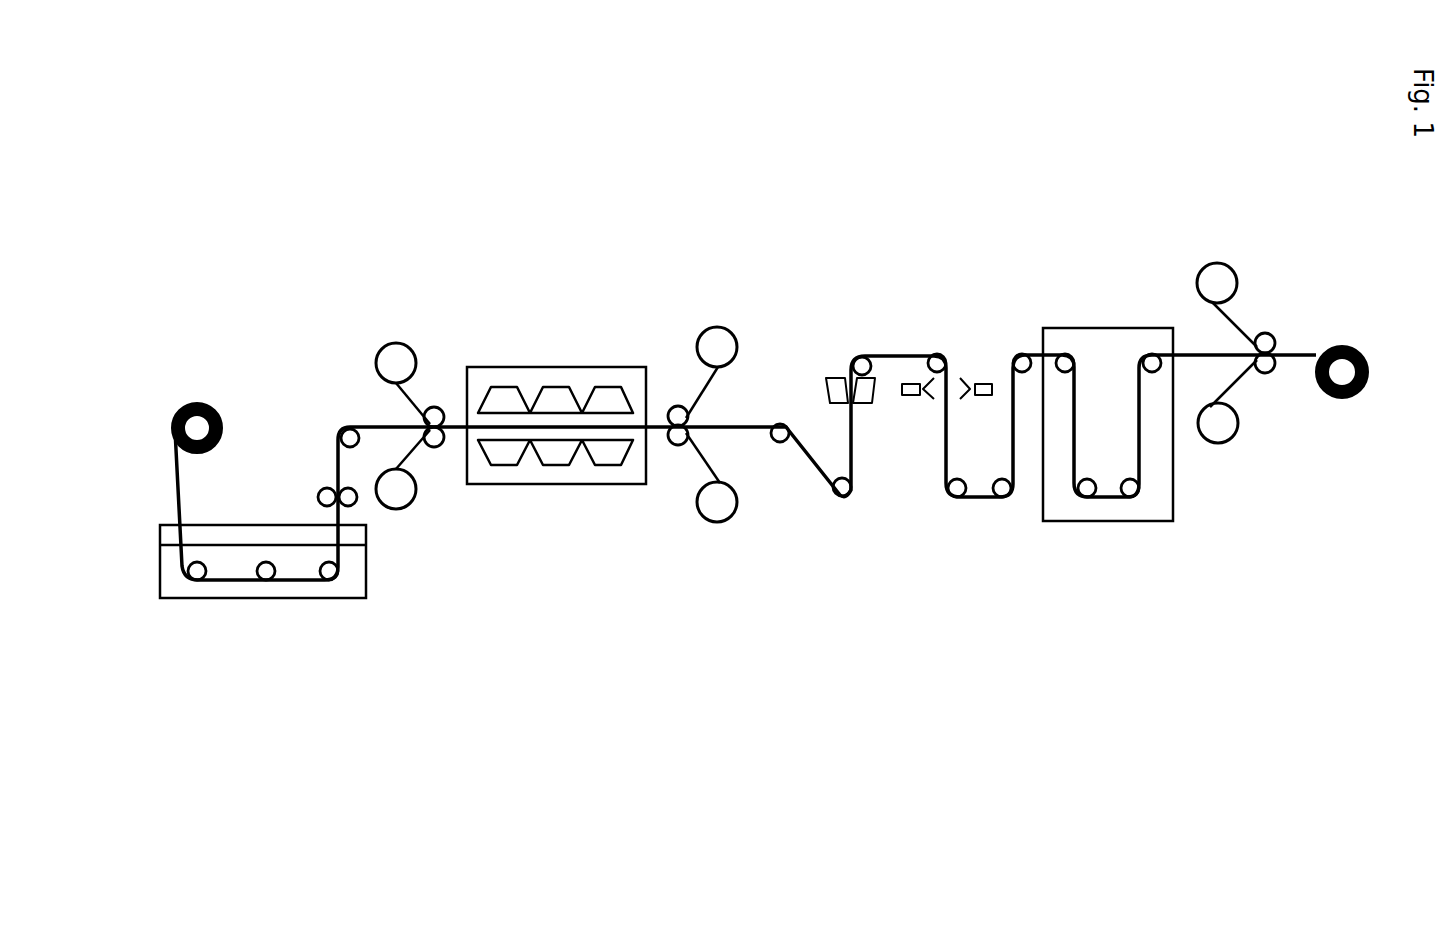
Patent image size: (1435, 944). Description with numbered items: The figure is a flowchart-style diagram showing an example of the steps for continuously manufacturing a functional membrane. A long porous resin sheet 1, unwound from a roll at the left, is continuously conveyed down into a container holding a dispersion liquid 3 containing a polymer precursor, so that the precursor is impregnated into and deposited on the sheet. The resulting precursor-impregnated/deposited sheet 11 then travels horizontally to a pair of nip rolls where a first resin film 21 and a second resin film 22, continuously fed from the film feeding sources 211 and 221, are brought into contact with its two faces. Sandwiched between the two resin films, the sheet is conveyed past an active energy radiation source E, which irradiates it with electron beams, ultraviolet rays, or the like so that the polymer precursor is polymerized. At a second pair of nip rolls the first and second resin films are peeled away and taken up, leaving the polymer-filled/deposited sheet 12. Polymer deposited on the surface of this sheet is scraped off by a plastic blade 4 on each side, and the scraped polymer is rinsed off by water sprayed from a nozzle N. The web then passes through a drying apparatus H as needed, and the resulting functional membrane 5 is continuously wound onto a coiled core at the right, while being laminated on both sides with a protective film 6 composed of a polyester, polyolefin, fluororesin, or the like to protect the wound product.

The porous resin sheet 1 is at (173, 467).
The dispersion liquid 3 is at (213, 592).
The precursor-impregnated/deposited sheet 11 is at (363, 424).
The film feeding source 211 is at (400, 341).
The film feeding source 221 is at (400, 513).
The first resin film 21 is at (418, 400).
The second resin film 22 is at (420, 457).
The active energy radiation source E is at (556, 392).
The polymer-filled/deposited sheet 12 is at (737, 432).
The plastic blade 4 is at (833, 375).
The spraying nozzle N is at (982, 380).
The functional membrane 5 is at (1195, 350).
The protective film 6 is at (1237, 325).
The drying apparatus H is at (1110, 513).